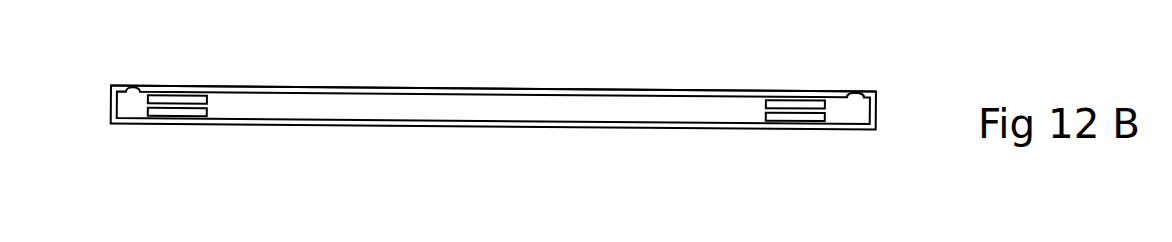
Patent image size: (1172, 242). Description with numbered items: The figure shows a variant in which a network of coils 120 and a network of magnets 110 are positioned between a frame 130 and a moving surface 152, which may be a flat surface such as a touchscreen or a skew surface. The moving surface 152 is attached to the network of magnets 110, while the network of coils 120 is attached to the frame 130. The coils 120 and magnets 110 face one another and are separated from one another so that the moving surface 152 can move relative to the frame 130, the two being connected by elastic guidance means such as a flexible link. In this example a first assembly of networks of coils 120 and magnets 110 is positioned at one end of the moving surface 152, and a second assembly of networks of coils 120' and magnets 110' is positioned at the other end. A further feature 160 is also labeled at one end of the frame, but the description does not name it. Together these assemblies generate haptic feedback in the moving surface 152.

The network of magnets 110 is at (771, 70).
The network of magnets 110' is at (172, 65).
The network of coils 120 is at (834, 156).
The network of coils 120' is at (169, 148).
The frame 130 is at (725, 128).
The moving surface 152 is at (370, 88).
The protrusion 160 is at (854, 92).